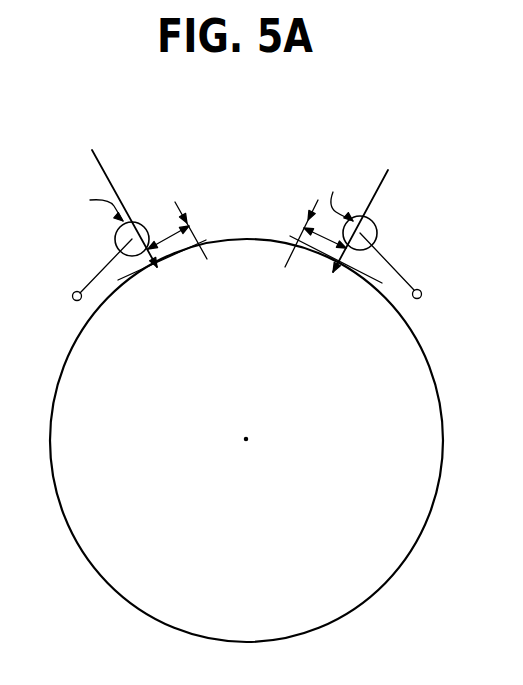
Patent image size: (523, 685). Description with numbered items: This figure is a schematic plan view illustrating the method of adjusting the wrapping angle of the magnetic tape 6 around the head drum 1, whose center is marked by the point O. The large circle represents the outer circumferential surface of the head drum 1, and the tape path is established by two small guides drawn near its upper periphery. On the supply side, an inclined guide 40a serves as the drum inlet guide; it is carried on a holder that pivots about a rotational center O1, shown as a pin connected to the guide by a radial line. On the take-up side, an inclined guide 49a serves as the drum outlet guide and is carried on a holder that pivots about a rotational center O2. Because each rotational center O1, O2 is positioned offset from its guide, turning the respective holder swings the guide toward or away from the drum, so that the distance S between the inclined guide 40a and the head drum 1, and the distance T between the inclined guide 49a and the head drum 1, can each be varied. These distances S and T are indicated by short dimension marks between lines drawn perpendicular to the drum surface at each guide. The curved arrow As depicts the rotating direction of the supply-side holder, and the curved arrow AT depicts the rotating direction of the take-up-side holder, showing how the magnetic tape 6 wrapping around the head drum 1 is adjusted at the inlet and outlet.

The head drum 1 is at (414, 393).
The magnetic tape 6 is at (125, 191).
The inclined guide 40a is at (143, 223).
The inclined guide 49a is at (378, 235).
The center of the head drum O is at (258, 439).
The rotational center of the holder O1 is at (75, 292).
The rotational center of the holder O2 is at (422, 293).
The distance S is at (198, 237).
The distance T is at (298, 242).
The arrow As is at (90, 204).
The arrow AT is at (338, 194).